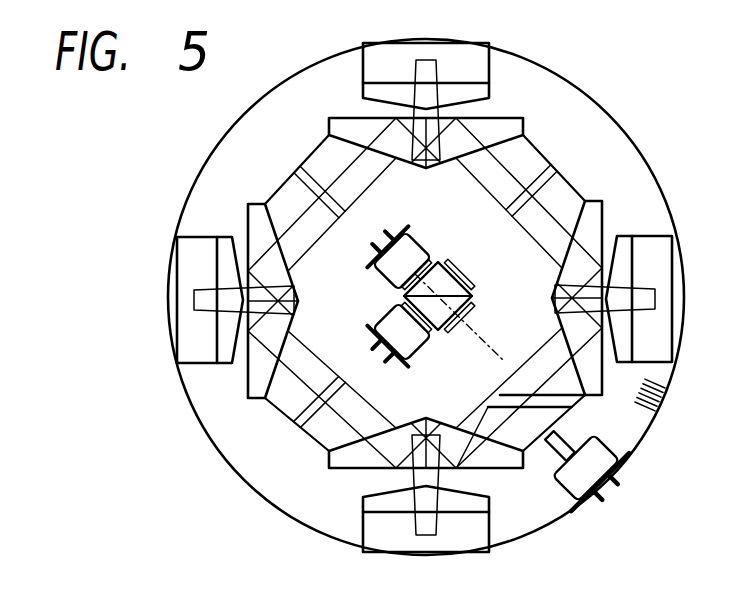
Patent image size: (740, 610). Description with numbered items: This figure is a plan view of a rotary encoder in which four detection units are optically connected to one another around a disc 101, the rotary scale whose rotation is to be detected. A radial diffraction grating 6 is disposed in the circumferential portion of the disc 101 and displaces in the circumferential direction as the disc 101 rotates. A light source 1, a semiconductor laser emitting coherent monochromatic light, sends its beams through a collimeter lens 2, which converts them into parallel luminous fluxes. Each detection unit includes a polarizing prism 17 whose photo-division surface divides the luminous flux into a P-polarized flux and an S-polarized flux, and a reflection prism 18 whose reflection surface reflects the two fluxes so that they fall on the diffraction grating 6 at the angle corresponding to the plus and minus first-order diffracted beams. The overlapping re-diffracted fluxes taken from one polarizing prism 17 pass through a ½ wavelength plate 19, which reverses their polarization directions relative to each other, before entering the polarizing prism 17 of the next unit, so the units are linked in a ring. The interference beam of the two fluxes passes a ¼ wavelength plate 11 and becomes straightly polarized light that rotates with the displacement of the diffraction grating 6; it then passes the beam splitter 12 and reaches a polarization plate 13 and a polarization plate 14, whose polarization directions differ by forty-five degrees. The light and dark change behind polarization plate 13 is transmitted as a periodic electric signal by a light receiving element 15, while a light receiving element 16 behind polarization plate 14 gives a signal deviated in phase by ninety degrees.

The light source 1 is at (628, 458).
The collimeter lens 2 is at (568, 441).
The radial diffraction grating 6 is at (664, 399).
The ¼ wavelength plate 11 is at (474, 303).
The beam splitter 12 is at (469, 286).
The polarization plate 13 is at (440, 257).
The polarization plate 14 is at (440, 331).
The light receiving element 15 is at (414, 243).
The light receiving element 16 is at (410, 351).
The polarizing prism 17 is at (345, 121).
The reflection prism 18 is at (370, 73).
The ½ wavelength plate 19 is at (299, 167).
The disc 101 is at (300, 520).